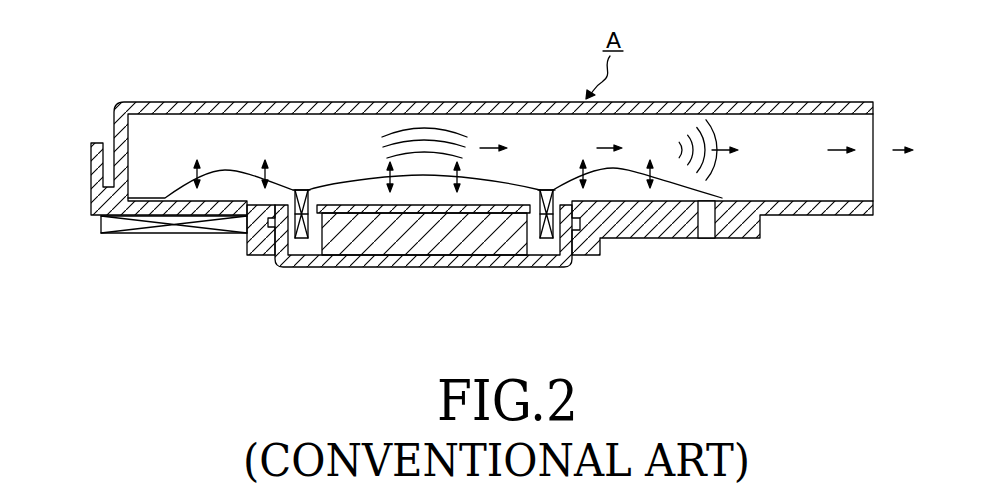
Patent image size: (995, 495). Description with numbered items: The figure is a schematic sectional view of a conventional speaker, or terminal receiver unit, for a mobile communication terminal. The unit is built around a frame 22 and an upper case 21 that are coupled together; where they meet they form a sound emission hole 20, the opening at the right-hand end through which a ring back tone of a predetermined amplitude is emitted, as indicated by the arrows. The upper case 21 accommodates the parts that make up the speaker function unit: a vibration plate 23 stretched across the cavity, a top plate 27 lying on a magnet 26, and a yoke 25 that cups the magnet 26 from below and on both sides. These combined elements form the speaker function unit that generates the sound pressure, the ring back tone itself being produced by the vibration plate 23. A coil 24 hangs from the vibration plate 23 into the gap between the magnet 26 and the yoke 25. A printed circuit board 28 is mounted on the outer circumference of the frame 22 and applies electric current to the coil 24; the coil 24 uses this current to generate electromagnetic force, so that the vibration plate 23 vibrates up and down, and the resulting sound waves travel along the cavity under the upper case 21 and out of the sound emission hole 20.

The sound emission hole 20 is at (873, 122).
The upper case 21 is at (343, 102).
The frame 22 is at (810, 216).
The vibration plate 23 is at (520, 187).
The coil 24 is at (550, 238).
The yoke 25 is at (363, 268).
The magnet 26 is at (428, 252).
The top plate 27 is at (335, 205).
The printed circuit board 28 is at (175, 234).